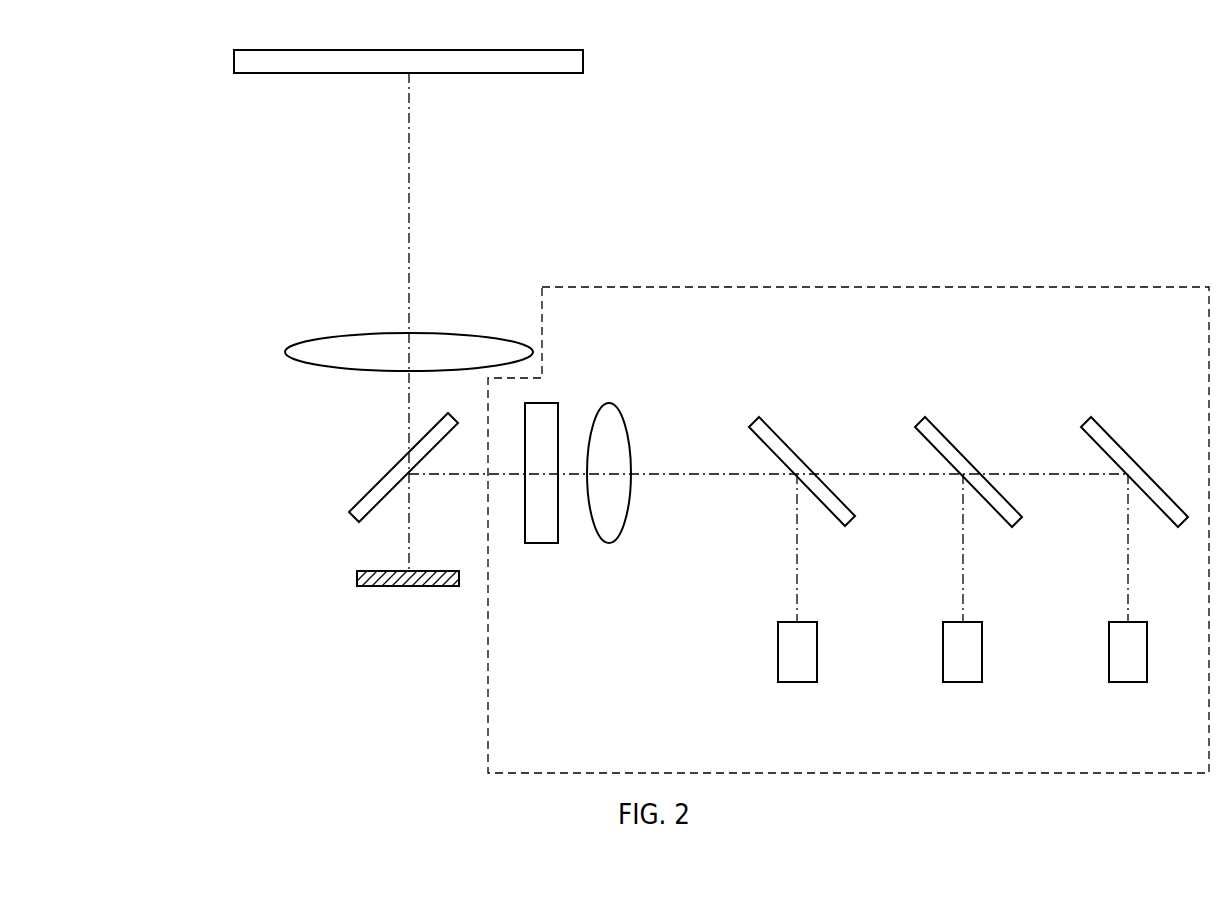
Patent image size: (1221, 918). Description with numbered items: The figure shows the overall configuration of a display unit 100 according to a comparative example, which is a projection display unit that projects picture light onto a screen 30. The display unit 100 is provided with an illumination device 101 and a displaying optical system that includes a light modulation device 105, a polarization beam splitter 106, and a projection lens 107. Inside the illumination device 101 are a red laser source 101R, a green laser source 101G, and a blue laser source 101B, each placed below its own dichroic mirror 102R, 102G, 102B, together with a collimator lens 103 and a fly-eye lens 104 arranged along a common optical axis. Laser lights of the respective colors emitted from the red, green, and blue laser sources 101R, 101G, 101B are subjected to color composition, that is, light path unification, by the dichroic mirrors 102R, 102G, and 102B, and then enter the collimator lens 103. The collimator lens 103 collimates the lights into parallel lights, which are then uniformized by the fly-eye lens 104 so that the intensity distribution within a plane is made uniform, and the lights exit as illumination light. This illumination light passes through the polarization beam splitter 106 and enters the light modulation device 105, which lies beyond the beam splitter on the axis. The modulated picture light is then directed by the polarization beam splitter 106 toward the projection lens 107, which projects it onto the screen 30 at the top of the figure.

The screen 30 is at (584, 62).
The display unit 100 is at (953, 68).
The illumination device 101 is at (878, 288).
The blue laser source 101B is at (799, 683).
The green laser source 101G is at (964, 683).
The red laser source 101R is at (1130, 683).
The dichroic mirror 102B is at (778, 432).
The dichroic mirror 102G is at (943, 432).
The dichroic mirror 102R is at (1109, 432).
The collimator lens 103 is at (606, 403).
The fly-eye lens 104 is at (543, 544).
The light modulation device 105 is at (410, 587).
The polarization beam splitter 106 is at (362, 498).
The projection lens 107 is at (286, 350).